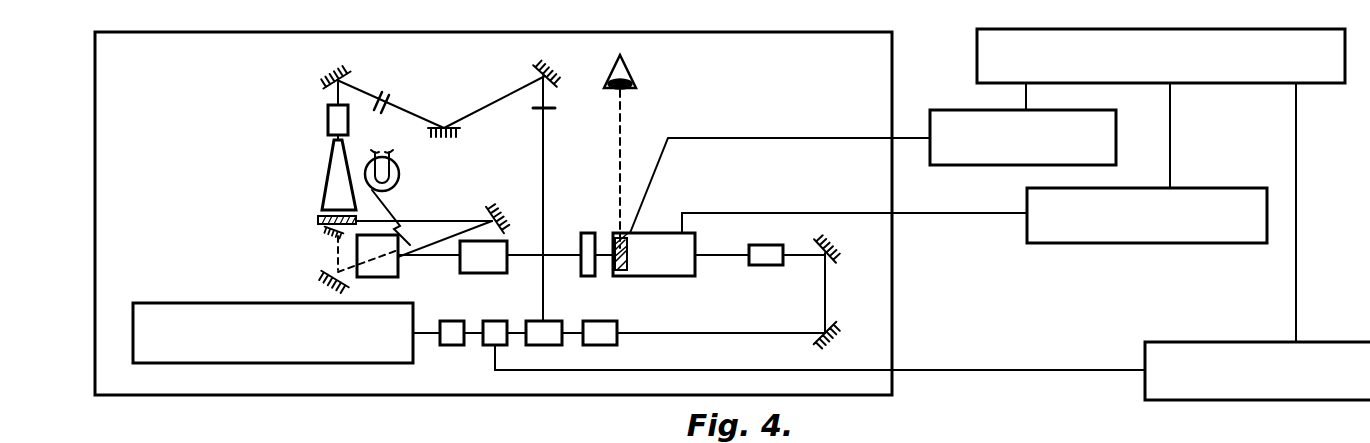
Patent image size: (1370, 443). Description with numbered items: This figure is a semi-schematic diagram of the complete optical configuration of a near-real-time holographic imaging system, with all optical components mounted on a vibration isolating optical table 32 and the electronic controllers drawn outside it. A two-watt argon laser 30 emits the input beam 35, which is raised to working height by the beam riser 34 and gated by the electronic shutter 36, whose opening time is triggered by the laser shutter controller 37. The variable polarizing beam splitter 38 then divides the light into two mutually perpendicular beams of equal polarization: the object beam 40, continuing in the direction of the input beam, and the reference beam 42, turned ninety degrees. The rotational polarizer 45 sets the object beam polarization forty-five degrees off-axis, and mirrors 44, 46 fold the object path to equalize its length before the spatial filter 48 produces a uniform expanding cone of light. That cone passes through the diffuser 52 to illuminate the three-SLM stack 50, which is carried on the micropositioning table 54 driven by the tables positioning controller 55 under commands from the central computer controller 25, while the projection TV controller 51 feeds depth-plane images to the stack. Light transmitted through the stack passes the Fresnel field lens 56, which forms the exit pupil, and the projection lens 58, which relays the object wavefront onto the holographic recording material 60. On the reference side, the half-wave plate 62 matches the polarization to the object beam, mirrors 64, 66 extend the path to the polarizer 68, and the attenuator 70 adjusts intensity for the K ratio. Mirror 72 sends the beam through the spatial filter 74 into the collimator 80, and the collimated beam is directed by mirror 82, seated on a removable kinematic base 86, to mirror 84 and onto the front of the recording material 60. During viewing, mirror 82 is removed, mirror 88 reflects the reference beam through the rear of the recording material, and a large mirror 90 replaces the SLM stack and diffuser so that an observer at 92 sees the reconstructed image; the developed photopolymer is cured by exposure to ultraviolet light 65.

The central computer controller 25 is at (1205, 84).
The argon laser 30 is at (262, 343).
The vibration isolating optical table 32 is at (156, 173).
The beam riser 34 is at (450, 321).
The input beam 35 is at (428, 335).
The electronic shutter 36 is at (493, 321).
The laser shutter controller 37 is at (1212, 342).
The variable polarizing beam splitter 38 is at (533, 349).
The object beam 40 is at (574, 328).
The reference beam 42 is at (545, 290).
The mirror 44 is at (812, 340).
The rotational polarizer 45 is at (600, 346).
The mirror 46 is at (836, 264).
The spatial filter 48 is at (758, 266).
The SLM stack 50 is at (612, 243).
The projection TV controller 51 is at (990, 166).
The diffuser 52 is at (626, 277).
The micropositioning table 54 is at (690, 278).
The tables positioning controller 55 is at (1130, 244).
The Fresnel field lens 56 is at (583, 234).
The projection lens 58 is at (497, 274).
The holographic recording material 60 is at (399, 266).
The half-wave plate 62 is at (548, 112).
The mirror 64 is at (532, 74).
The ultraviolet light 65 is at (401, 174).
The mirror 66 is at (462, 130).
The polarizer 68 is at (394, 100).
The attenuator 70 is at (382, 96).
The mirror 72 is at (324, 93).
The spatial filter 74 is at (328, 125).
The collimator 80 is at (324, 183).
The mirror 82 is at (318, 214).
The mirror 84 is at (475, 200).
The kinematic base 86 is at (318, 230).
The mirror 88 is at (318, 270).
The mirror 90 is at (653, 215).
The observer 92 is at (636, 80).